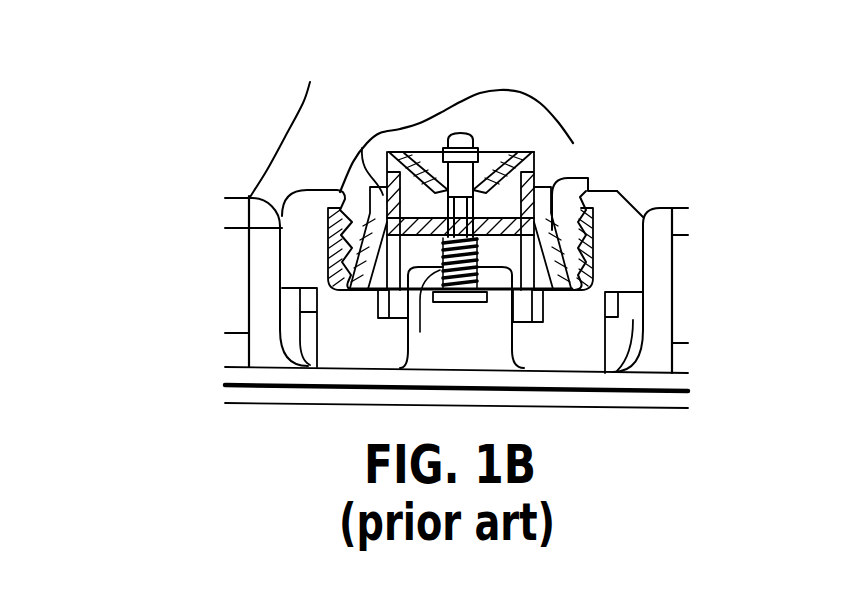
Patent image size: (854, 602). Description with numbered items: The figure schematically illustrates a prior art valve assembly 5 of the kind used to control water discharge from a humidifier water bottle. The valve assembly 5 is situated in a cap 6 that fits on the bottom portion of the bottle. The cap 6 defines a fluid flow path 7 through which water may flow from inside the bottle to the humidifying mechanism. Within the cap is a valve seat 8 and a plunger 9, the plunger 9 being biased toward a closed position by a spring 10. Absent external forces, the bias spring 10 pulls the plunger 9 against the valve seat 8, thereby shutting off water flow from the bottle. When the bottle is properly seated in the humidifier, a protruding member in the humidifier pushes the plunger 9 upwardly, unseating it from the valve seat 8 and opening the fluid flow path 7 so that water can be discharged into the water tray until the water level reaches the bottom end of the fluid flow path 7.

The valve assembly 5 is at (596, 117).
The cap 6 is at (617, 191).
The fluid flow path 7 is at (423, 190).
The valve seat 8 is at (357, 146).
The plunger 9 is at (512, 155).
The spring 10 is at (406, 335).